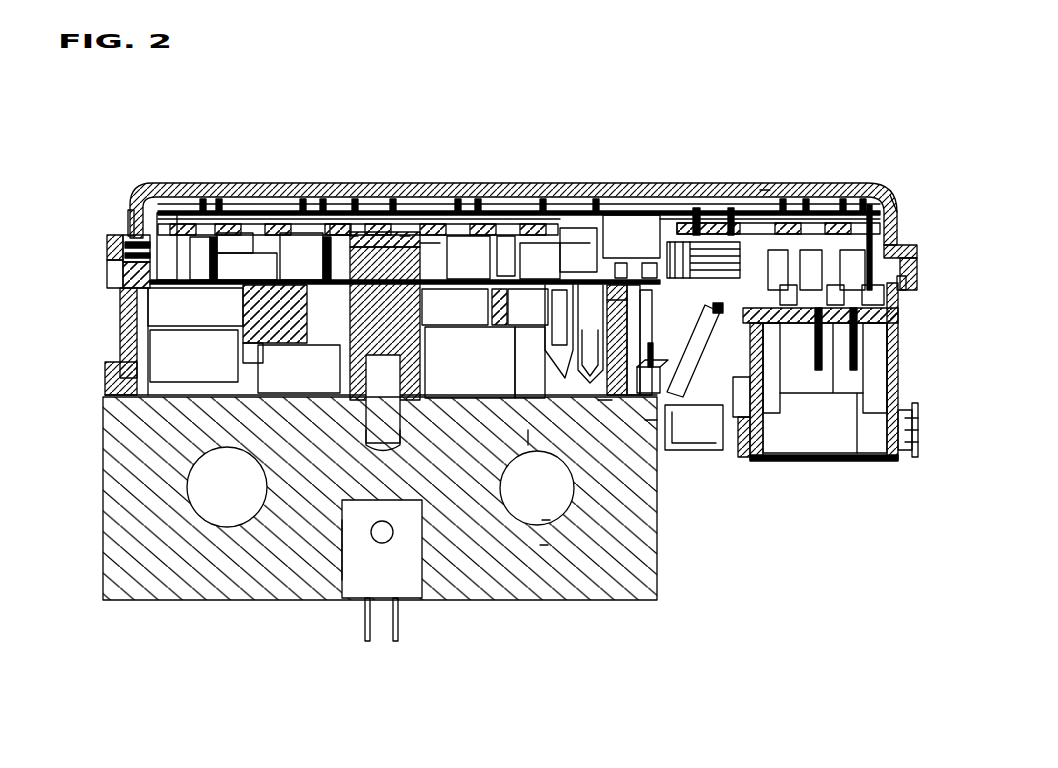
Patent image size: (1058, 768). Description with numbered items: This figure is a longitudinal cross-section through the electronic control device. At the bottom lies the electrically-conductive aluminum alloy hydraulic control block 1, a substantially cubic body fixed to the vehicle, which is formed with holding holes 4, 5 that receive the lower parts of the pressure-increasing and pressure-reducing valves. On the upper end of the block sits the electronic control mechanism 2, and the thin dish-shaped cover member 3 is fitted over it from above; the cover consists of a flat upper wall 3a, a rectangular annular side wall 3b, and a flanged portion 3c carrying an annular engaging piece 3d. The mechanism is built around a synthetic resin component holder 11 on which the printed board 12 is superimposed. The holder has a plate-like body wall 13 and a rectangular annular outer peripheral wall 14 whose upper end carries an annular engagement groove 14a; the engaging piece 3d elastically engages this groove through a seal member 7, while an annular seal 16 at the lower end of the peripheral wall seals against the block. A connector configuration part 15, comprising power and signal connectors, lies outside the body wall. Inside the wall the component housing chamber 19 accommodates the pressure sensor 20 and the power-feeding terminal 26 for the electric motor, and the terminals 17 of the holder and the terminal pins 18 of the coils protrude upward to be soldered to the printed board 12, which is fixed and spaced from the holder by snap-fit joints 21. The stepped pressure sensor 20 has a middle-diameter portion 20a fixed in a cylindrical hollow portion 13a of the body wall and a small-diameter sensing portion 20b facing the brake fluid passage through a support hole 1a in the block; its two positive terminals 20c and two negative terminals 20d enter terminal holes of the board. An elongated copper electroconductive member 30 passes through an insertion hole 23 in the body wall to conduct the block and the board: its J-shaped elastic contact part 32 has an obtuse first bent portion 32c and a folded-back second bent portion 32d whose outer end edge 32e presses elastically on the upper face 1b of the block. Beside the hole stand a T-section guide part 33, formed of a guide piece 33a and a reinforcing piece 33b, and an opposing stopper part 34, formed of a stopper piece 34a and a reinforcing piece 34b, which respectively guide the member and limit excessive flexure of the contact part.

The hydraulic control block 1 is at (101, 530).
The support hole 1a is at (342, 520).
The upper face 1b is at (528, 435).
The electronic control mechanism 2 is at (113, 319).
The cover member 3 is at (192, 172).
The upper wall 3a is at (766, 183).
The side wall 3b is at (891, 186).
The flanged portion 3c is at (912, 247).
The engaging piece 3d is at (908, 283).
The holding hole 4 is at (218, 520).
The holding hole 5 is at (545, 518).
The seal member 7 is at (128, 232).
The component holder 11 is at (475, 300).
The printed board 12 is at (521, 217).
The body wall 13 is at (487, 220).
The cylindrical hollow portion 13a is at (343, 222).
The outer peripheral wall 14 is at (104, 285).
The annular engagement groove 14a is at (123, 243).
The connector configuration part 15 is at (905, 385).
The annular seal 16 is at (690, 455).
The terminals 17 is at (835, 190).
The terminal pins 18 is at (270, 200).
The component housing chamber 19 is at (272, 385).
The pressure sensor 20 is at (345, 365).
The middle-diameter portion 20a is at (436, 186).
The small-diameter portion 20b is at (395, 540).
The positive terminals 20c is at (356, 232).
The negative terminals 20d is at (404, 232).
The snap-fit joints 21 is at (877, 195).
The insertion hole 23 is at (633, 213).
The power-feeding terminal 26 is at (396, 605).
The electroconductive member 30 is at (600, 405).
The elastic contact part 32 is at (598, 410).
The first bent portion 32c is at (648, 422).
The second bent portion 32d is at (545, 545).
The outer end edge 32e is at (546, 520).
The guide part 33 is at (680, 378).
The guide piece 33a is at (697, 196).
The reinforcing piece 33b is at (618, 322).
The stopper part 34 is at (565, 395).
The stopper piece 34a is at (574, 186).
The reinforcing piece 34b is at (580, 335).